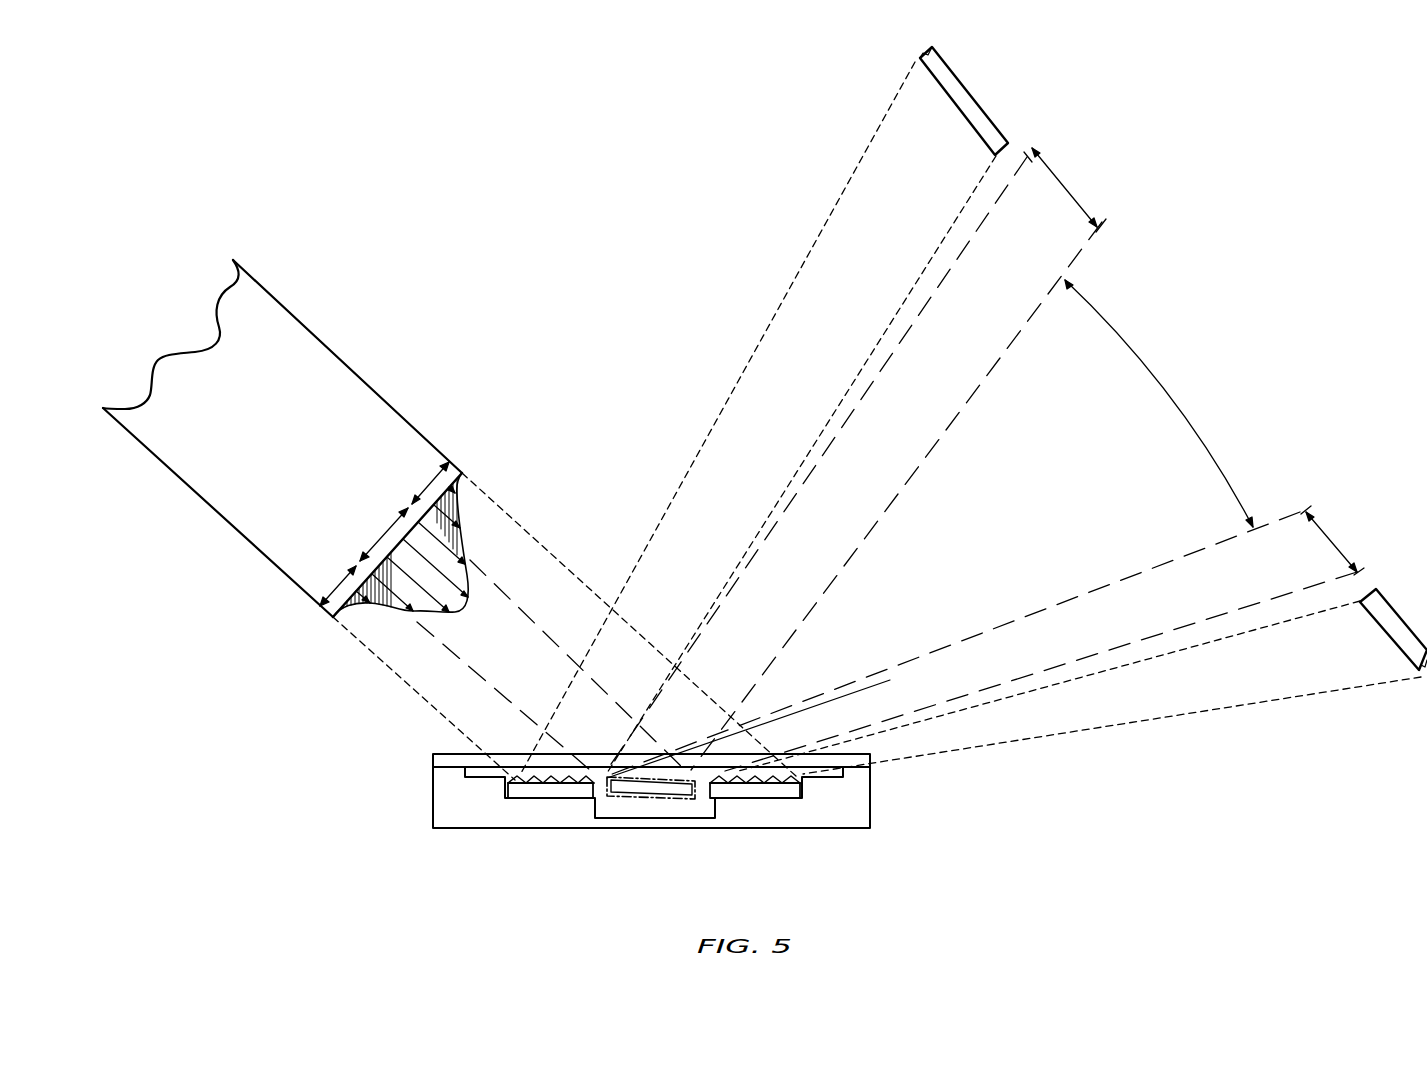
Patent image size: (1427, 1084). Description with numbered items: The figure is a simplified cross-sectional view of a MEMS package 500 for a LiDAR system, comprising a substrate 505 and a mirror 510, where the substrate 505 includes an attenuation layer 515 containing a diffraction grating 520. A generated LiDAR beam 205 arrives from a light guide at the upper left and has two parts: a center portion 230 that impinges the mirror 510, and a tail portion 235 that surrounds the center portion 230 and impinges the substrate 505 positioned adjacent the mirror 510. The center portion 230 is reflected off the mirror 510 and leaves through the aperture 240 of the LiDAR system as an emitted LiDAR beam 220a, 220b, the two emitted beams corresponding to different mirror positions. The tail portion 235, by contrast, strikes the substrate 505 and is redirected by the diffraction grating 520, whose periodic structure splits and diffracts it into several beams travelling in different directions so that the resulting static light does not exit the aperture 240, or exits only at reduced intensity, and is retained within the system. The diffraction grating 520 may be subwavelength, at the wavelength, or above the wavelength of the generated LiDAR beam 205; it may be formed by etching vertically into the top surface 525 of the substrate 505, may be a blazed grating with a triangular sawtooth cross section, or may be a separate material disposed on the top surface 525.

The generated LiDAR beam 205 is at (267, 412).
The center portion 230 is at (390, 527).
The tail portion 235 is at (424, 480).
The emitted LiDAR beam 220a is at (953, 165).
The emitted LiDAR beam 220b is at (1355, 659).
The aperture 240 is at (996, 148).
The MEMS package 500 is at (413, 737).
The substrate 505 is at (535, 796).
The mirror 510 is at (657, 800).
The attenuation layer 515 is at (553, 796).
The diffraction grating 520 is at (510, 799).
The top surface 525 is at (582, 784).